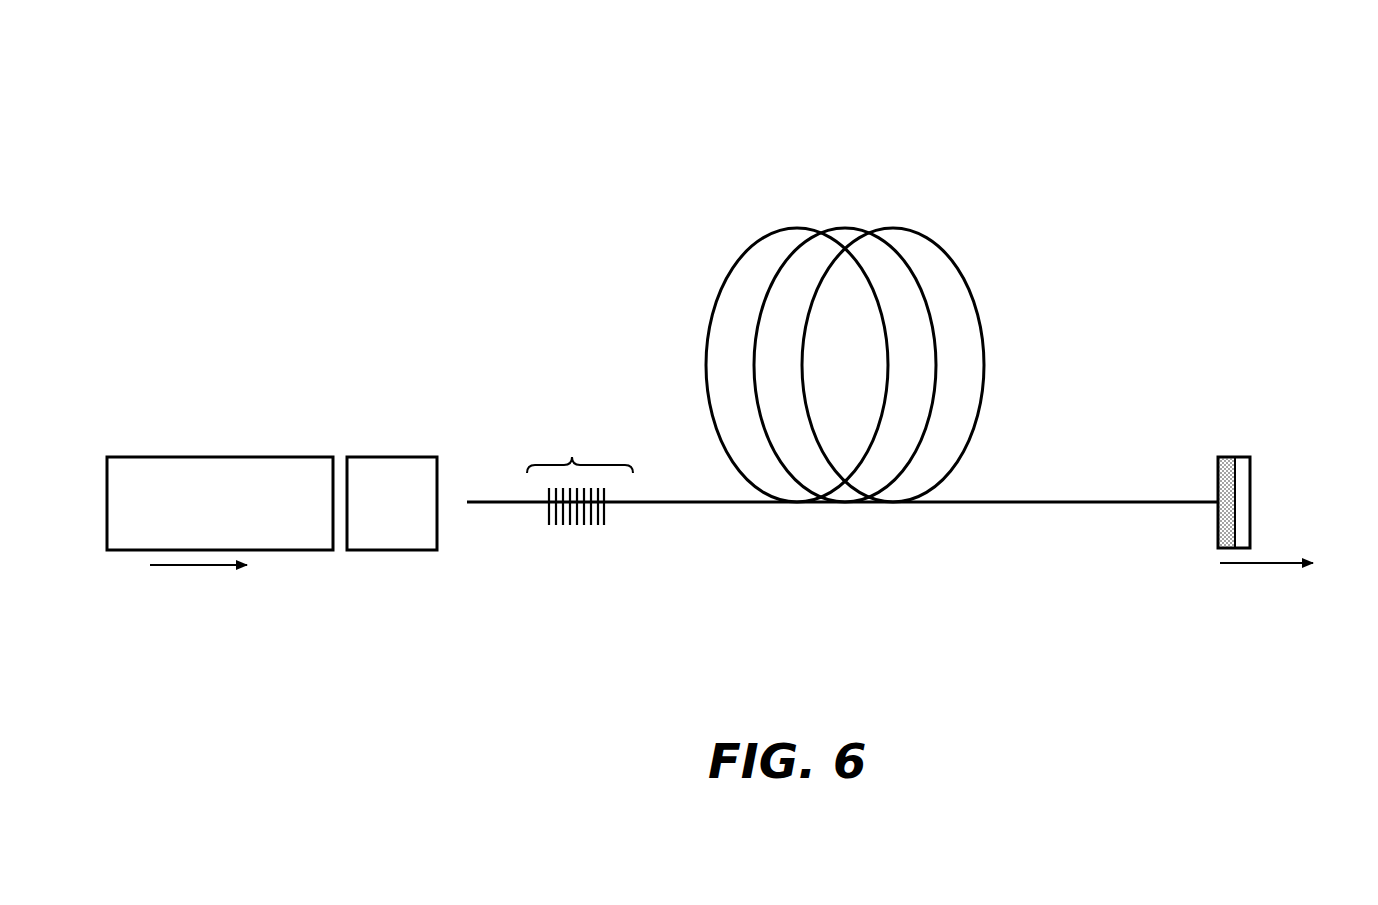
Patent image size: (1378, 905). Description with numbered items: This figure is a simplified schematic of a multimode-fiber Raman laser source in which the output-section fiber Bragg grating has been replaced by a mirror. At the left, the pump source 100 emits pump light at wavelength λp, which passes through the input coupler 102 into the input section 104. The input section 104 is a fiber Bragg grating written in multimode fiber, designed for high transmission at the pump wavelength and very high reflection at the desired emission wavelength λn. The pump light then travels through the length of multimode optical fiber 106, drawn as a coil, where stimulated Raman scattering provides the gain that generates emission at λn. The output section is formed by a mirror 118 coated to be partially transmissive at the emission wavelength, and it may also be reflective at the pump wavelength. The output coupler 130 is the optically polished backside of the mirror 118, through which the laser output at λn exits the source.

The pump source 100 is at (242, 455).
The input coupler 102 is at (392, 455).
The input section 104 is at (571, 456).
The length of multimode optical fiber 106 is at (846, 228).
The mirror 118 is at (1235, 427).
The output coupler 130 is at (1263, 502).